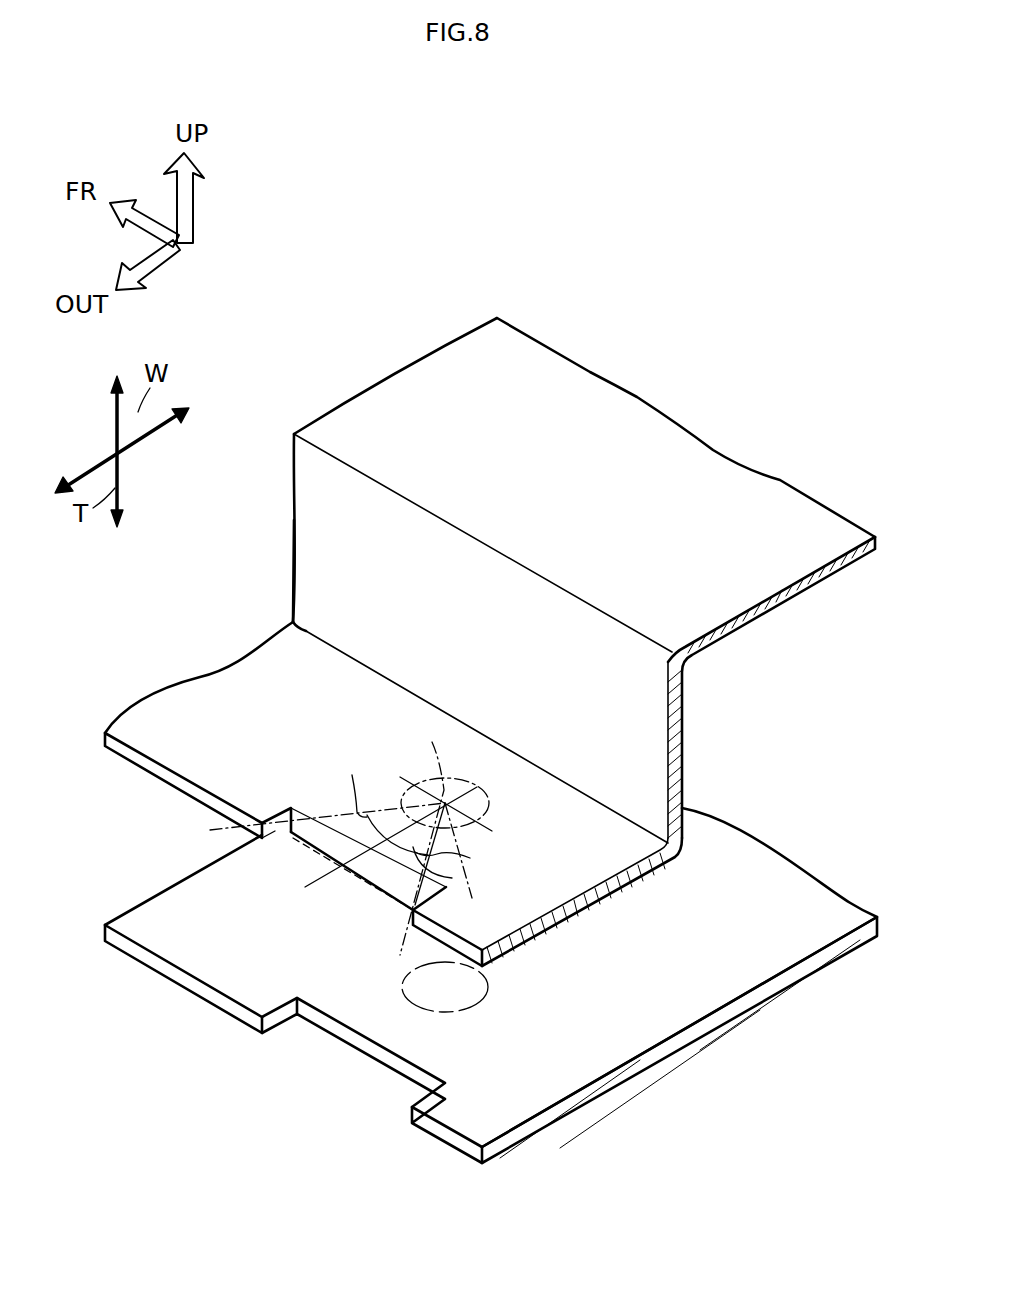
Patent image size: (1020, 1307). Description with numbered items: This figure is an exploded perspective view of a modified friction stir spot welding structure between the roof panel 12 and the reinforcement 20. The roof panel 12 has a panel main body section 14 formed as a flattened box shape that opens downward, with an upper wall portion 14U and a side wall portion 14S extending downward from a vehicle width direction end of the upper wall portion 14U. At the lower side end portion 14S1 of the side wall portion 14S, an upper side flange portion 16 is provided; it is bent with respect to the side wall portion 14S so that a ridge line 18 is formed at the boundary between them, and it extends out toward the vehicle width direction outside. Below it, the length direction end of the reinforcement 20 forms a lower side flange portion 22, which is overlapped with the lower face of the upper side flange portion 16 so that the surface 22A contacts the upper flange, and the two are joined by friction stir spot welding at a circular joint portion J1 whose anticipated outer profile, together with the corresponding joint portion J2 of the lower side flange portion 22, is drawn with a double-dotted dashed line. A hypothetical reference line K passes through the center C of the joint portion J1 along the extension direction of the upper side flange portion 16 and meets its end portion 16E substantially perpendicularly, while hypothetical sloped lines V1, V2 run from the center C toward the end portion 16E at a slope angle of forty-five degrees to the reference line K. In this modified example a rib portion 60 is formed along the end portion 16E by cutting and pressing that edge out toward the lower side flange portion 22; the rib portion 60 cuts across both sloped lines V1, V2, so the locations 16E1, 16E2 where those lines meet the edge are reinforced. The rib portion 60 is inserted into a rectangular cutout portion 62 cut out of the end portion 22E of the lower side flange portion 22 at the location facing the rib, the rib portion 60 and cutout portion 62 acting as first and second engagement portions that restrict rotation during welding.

The roof panel 12 is at (732, 297).
The panel main body section 14 is at (697, 467).
The upper wall portion 14U is at (778, 503).
The side wall portion 14S is at (315, 524).
The lower side end portion 14S1 is at (315, 578).
The ridge line 18 is at (320, 643).
The upper side flange portion 16 is at (192, 706).
The end portion of upper side flange portion 16E is at (197, 755).
The location of end portion intersected by sloped line 16E1 is at (257, 836).
The location of end portion intersected by sloped line 16E2 is at (414, 928).
The rib portion 60 is at (392, 873).
The reinforcement 20 is at (815, 1000).
The lower side flange portion 22 is at (708, 1032).
The surface of lower side flange portion 22A is at (600, 1038).
The end portion of lower side flange portion 22E is at (213, 970).
The cutout portion 62 is at (383, 1062).
The center of joint portion C is at (422, 834).
The joint portion J1 is at (489, 810).
The joint portion J2 is at (488, 985).
The hypothetical reference line K is at (316, 880).
The hypothetical sloped line V1 is at (338, 813).
The hypothetical sloped line V2 is at (477, 863).